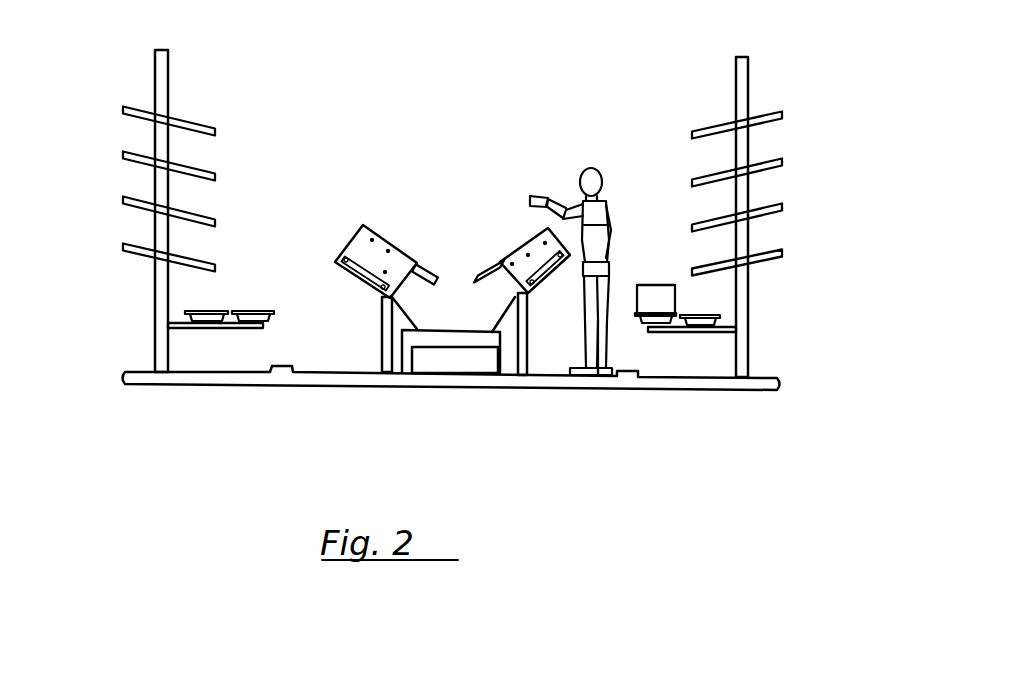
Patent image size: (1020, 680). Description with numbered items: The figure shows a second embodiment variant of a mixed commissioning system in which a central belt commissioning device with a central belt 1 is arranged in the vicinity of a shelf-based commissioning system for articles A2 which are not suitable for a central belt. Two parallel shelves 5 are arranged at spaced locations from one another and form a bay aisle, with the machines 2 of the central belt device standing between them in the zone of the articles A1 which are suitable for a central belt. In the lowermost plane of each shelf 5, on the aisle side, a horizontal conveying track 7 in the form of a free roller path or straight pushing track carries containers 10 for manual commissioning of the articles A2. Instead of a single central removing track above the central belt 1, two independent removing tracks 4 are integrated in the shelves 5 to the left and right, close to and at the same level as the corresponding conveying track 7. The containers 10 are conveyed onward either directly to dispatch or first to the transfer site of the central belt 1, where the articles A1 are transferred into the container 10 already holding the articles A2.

The central belt 1 is at (458, 333).
The processing machine 2 is at (368, 250).
The removing track 4 is at (213, 310).
The shelf 5 is at (217, 173).
The conveying track 7 is at (263, 308).
The container 10 is at (657, 293).
The articles suitable for a central belt A1 is at (488, 100).
The articles not suitable for a central belt A2 is at (222, 93).